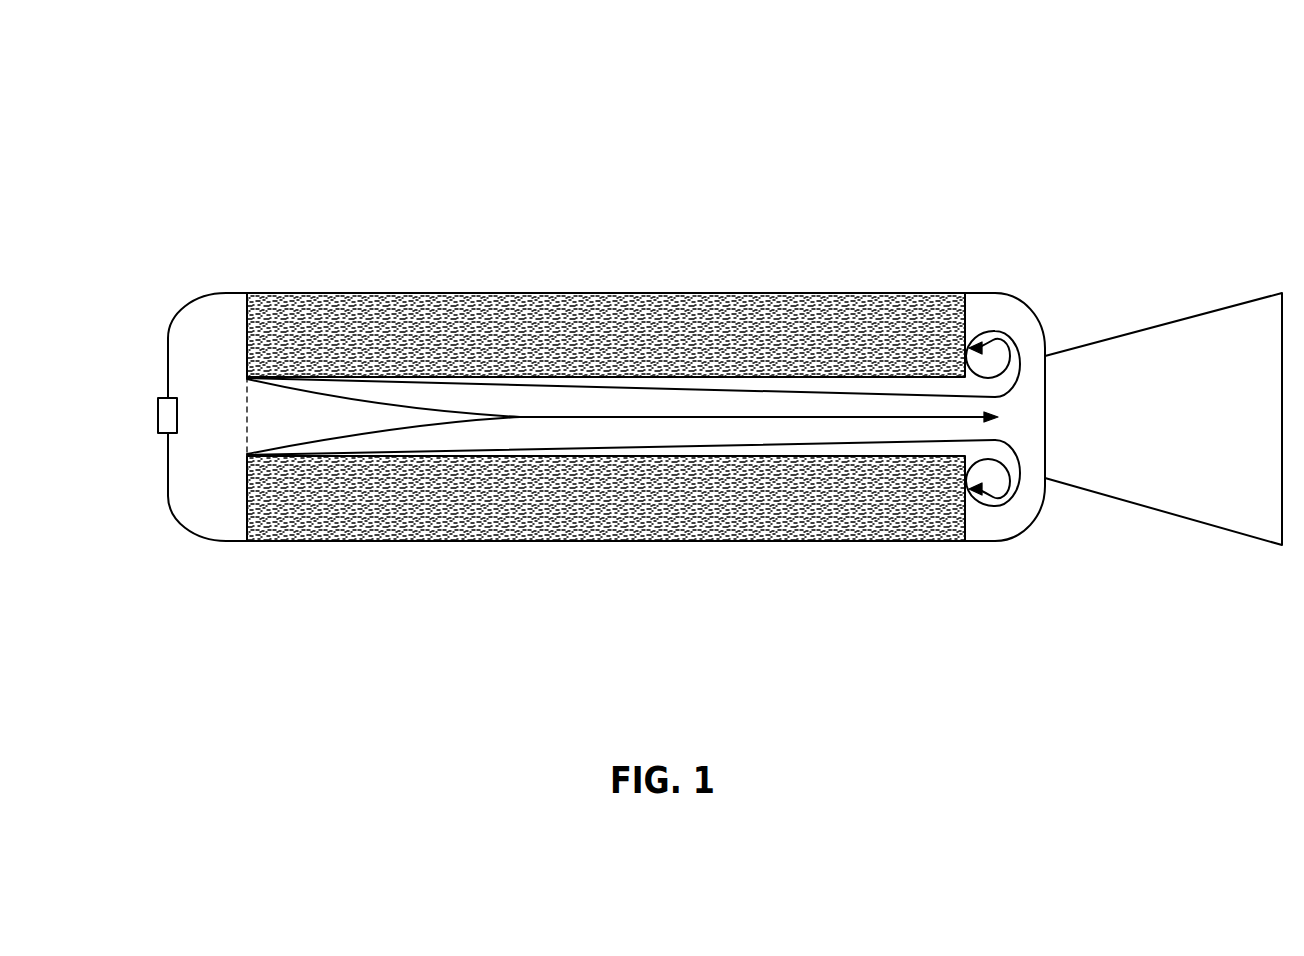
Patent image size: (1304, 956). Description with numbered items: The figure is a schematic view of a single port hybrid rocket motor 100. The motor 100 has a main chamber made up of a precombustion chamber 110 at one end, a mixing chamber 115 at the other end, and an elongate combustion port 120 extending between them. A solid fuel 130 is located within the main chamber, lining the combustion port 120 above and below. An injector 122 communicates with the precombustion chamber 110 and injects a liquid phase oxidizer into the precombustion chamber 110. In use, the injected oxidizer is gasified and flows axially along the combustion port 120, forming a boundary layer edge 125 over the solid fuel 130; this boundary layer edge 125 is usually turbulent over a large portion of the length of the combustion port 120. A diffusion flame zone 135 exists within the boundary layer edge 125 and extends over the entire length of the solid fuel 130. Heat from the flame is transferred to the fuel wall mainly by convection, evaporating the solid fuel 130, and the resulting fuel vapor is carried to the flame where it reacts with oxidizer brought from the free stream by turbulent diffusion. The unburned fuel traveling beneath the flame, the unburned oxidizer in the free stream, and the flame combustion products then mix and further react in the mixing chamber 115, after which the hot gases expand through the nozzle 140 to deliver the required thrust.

The single port hybrid rocket motor 100 is at (341, 109).
The precombustion chamber 110 is at (232, 302).
The mixing chamber 115 is at (1000, 513).
The combustion port 120 is at (648, 403).
The injector 122 is at (158, 422).
The boundary layer edge 125 is at (368, 433).
The solid fuel 130 is at (635, 515).
The diffusion flame zone 135 is at (862, 397).
The nozzle 140 is at (1175, 515).